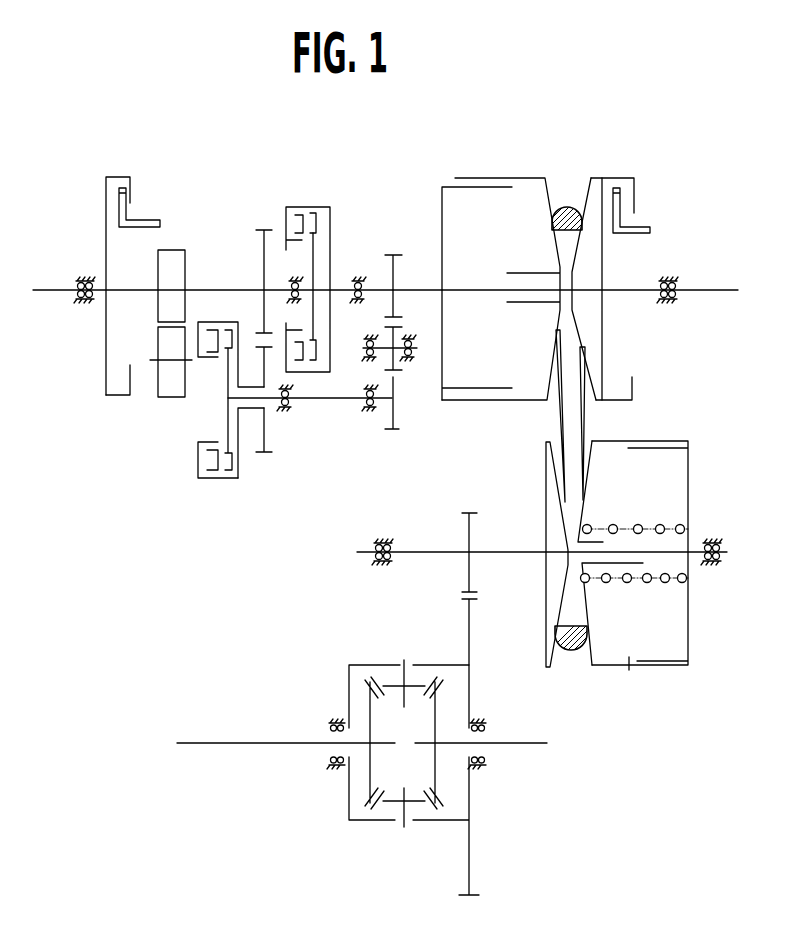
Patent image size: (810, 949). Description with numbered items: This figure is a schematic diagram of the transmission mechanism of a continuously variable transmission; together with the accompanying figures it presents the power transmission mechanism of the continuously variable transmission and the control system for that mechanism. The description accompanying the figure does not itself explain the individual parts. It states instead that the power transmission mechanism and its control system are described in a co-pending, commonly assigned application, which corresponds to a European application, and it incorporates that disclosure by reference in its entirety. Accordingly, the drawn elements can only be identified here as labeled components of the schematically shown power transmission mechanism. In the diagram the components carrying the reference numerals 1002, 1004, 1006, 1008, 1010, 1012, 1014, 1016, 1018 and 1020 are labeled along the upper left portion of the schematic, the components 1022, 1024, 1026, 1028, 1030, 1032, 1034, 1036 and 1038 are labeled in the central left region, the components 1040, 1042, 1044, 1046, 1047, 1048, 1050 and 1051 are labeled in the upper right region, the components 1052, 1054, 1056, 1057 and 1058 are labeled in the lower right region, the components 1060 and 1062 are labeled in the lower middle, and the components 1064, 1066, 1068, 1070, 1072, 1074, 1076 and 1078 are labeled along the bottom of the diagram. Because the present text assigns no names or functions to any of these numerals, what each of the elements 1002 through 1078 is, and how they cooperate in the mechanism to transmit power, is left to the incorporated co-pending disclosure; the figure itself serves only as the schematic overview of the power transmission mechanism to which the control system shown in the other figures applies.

The input shaft 1002 is at (58, 288).
The clutch assembly 1004 is at (306, 264).
The belt section 1006 is at (565, 153).
The output shaft 1008 is at (630, 290).
The clutch 1010 is at (135, 325).
The clutch plate 1012 is at (180, 258).
The clutch plate 1014 is at (180, 388).
The clutch housing 1016 is at (105, 355).
The housing flange 1018 is at (118, 396).
The clutch piston 1020 is at (130, 203).
The countershaft 1022 is at (348, 400).
The clutch 1024 is at (194, 430).
The gear 1026 is at (263, 262).
The gear 1028 is at (263, 432).
The gear 1030 is at (393, 273).
The gear 1032 is at (393, 303).
The gear 1034 is at (397, 420).
The clutch piston 1036 is at (285, 222).
The clutch piston 1038 is at (198, 460).
The movable sheave 1040 is at (583, 187).
The sheave flange 1042 is at (477, 196).
The fixed sheave 1044 is at (545, 177).
The sheave housing 1046 is at (634, 178).
The sheave housing flange 1047 is at (633, 385).
The hydraulic piston 1048 is at (623, 208).
The belt 1050 is at (584, 430).
The belt section 1051 is at (569, 667).
The secondary shaft 1052 is at (425, 553).
The movable sheave 1054 is at (548, 628).
The sheave housing 1056 is at (630, 670).
The rollers 1057 is at (648, 584).
The fixed sheave 1058 is at (591, 666).
The gear 1060 is at (469, 512).
The gear 1062 is at (470, 622).
The differential housing 1064 is at (352, 663).
The ring gear 1066 is at (390, 683).
The gear 1068 is at (388, 804).
The differential 1070 is at (395, 734).
The side gear 1072 is at (367, 768).
The side gear 1074 is at (436, 782).
The axle shaft 1076 is at (260, 744).
The axle shaft 1078 is at (537, 744).